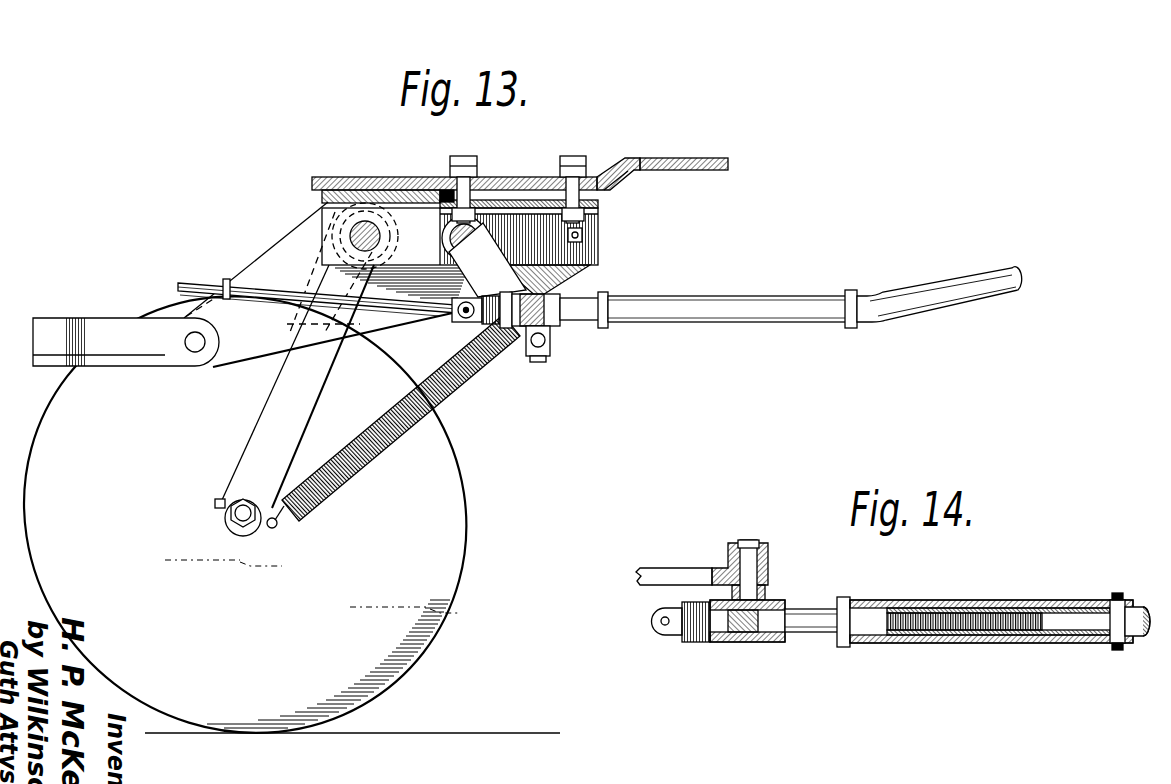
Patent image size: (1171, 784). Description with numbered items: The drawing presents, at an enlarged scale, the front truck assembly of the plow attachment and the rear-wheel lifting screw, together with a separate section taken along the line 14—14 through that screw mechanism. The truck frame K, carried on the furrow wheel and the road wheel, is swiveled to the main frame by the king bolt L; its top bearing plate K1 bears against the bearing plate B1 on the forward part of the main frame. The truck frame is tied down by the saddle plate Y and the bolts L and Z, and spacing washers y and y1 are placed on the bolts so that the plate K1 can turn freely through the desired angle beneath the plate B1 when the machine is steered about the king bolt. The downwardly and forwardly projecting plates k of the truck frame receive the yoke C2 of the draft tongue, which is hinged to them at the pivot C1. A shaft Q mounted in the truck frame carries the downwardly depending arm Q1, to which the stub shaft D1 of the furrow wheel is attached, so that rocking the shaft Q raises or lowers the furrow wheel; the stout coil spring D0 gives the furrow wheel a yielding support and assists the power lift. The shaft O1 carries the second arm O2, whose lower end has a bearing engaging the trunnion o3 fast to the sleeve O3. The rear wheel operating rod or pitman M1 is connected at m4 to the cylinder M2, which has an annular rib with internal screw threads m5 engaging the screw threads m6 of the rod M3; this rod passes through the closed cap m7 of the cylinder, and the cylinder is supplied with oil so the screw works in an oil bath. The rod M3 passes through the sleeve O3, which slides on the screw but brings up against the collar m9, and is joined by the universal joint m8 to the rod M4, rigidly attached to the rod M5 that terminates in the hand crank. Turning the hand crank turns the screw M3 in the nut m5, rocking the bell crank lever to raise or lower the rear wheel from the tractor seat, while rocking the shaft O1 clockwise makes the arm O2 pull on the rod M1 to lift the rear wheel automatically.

In FIG. 13, the truck frame K is at (334, 190).
In FIG. 13, the top bearing plate K1 is at (360, 203).
In FIG. 13, the saddle plate Y is at (600, 201).
In FIG. 13, the bearing plate B1 is at (708, 158).
In FIG. 13, the spacing washer y is at (437, 190).
In FIG. 13, the spacing washer y1 is at (620, 172).
In FIG. 13, the shaft Q is at (366, 233).
In FIG. 13, the shaft O1 is at (478, 240).
In FIG. 13, the second arm O2 is at (522, 200).
In FIG. 14, the second arm O2 is at (655, 566).
In FIG. 13, the king bolt L is at (466, 158).
In FIG. 13, the bolt Z is at (578, 162).
In FIG. 13, the downwardly and forwardly projecting plates k is at (305, 228).
In FIG. 13, the rod M5 is at (180, 283).
In FIG. 13, the rod M4 is at (228, 281).
In FIG. 13, the yoke C2 is at (45, 318).
In FIG. 13, the hinge C1 is at (193, 353).
In FIG. 13, the downwardly depending arm Q1 is at (262, 420).
In FIG. 13, the stub shaft D1 is at (228, 521).
In FIG. 13, the coil spring D0 is at (355, 478).
In FIG. 13, the universal joint m8 is at (474, 327).
In FIG. 14, the universal joint m8 is at (650, 632).
In FIG. 13, the collar m9 is at (494, 326).
In FIG. 14, the collar m9 is at (697, 645).
In FIG. 13, the sleeve O3 is at (532, 347).
In FIG. 14, the sleeve O3 is at (725, 645).
In FIG. 14, the trunnion o3 is at (748, 540).
In FIG. 13, the rod M3 is at (592, 328).
In FIG. 14, the rod M3 is at (812, 634).
In FIG. 13, the closed cap m7 is at (603, 328).
In FIG. 14, the closed cap m7 is at (843, 648).
In FIG. 13, the cylinder M2 is at (779, 324).
In FIG. 14, the cylinder M2 is at (900, 646).
In FIG. 13, the connection m4 is at (855, 328).
In FIG. 14, the connection m4 is at (1120, 650).
In FIG. 13, the rear wheel operating rod or pitman M1 is at (972, 294).
In FIG. 14, the rear wheel operating rod or pitman M1 is at (1144, 604).
In FIG. 14, the internal screw threads m5 is at (975, 612).
In FIG. 14, the screw threads m6 is at (935, 608).
In FIG. 13, the section line 14 is at (877, 288).